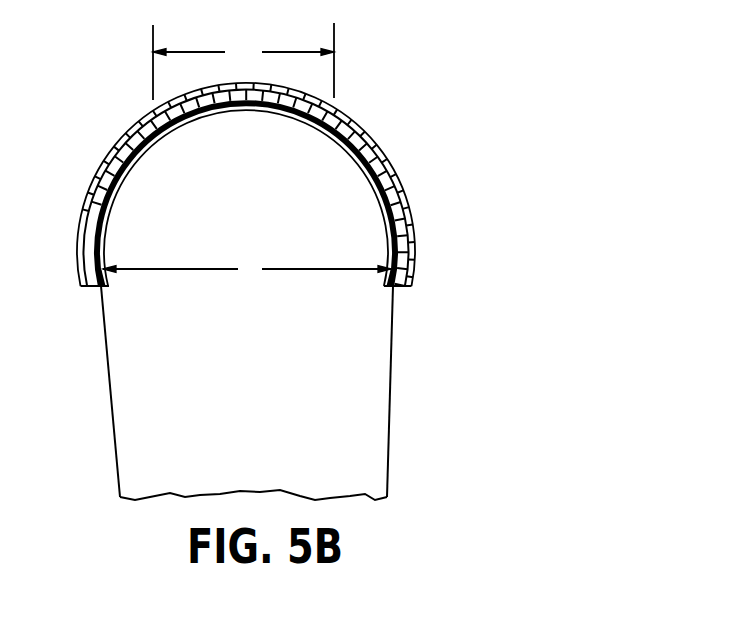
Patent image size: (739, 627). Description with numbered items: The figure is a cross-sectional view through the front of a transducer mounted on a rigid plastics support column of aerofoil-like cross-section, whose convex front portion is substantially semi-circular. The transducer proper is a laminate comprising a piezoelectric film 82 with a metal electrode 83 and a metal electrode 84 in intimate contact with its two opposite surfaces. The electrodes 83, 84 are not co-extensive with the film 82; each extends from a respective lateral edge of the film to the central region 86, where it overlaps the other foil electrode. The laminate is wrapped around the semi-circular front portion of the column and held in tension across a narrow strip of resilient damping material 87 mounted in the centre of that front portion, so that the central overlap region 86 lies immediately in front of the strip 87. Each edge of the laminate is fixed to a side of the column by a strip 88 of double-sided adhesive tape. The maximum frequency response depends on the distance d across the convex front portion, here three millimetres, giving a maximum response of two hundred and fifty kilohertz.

The piezoelectric film 82 is at (138, 137).
The metal electrode 83 is at (90, 210).
The metal electrode 84 is at (390, 173).
The central region 86 is at (243, 61).
The strip of resilient damping material 87 is at (262, 122).
The strip of double-sided adhesive tape 88 is at (102, 268).
The distance across the convex front portion d is at (247, 269).